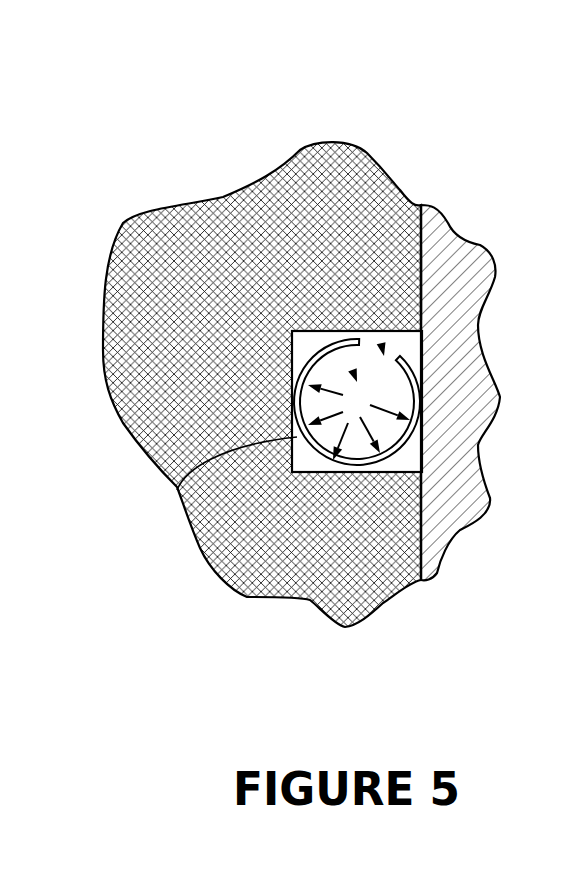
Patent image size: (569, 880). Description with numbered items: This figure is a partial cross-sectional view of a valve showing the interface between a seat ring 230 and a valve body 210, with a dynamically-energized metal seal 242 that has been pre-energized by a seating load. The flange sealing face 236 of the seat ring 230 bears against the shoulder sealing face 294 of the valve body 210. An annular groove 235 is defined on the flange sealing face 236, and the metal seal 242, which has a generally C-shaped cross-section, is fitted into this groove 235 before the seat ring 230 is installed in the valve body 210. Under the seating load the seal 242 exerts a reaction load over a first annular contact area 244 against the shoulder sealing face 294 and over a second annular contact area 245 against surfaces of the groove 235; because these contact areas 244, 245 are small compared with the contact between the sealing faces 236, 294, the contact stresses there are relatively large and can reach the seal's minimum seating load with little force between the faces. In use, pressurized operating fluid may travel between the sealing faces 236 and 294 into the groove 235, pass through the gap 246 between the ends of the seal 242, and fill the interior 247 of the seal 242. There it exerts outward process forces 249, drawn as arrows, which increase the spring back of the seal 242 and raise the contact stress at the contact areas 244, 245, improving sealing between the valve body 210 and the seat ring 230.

The valve body 210 is at (473, 377).
The seat ring 230 is at (218, 300).
The annular groove 235 is at (293, 452).
The flange sealing face 236 is at (421, 231).
The dynamically-energized metal seal 242 is at (177, 490).
The first annular contact area 244 is at (430, 396).
The second annular contact area 245 is at (282, 411).
The gap 246 is at (377, 345).
The interior of seal 247 is at (350, 371).
The outward process forces 249 is at (332, 418).
The shoulder sealing face 294 is at (420, 283).